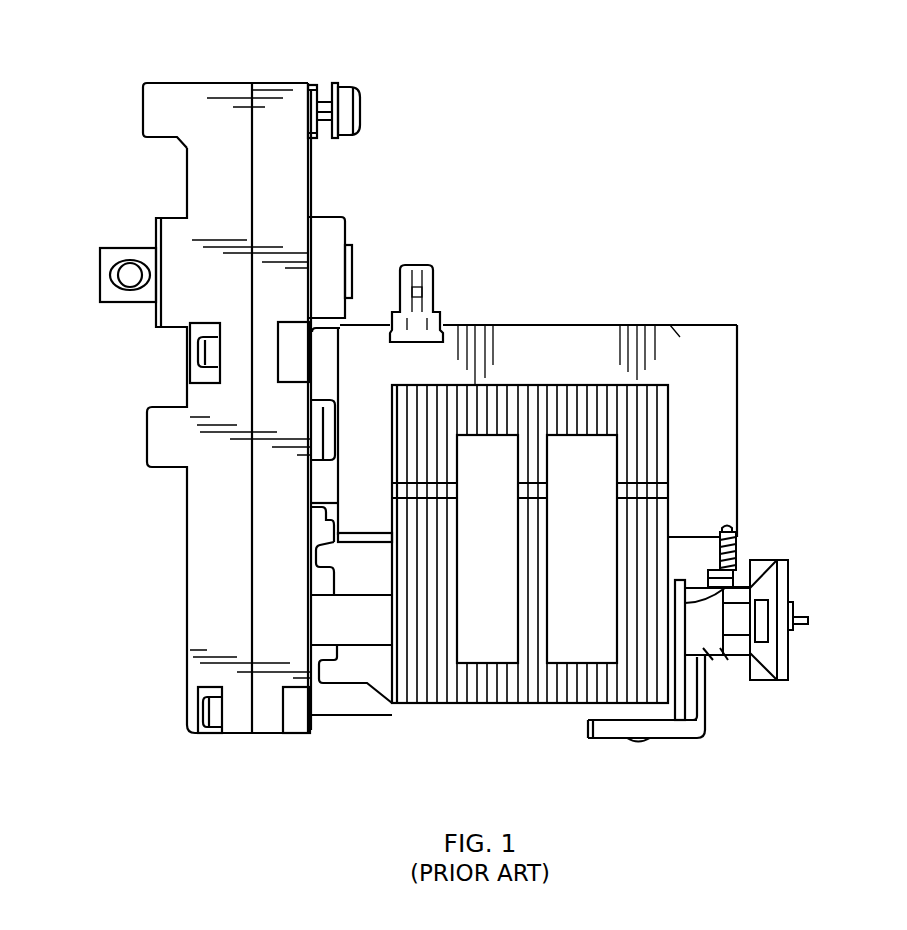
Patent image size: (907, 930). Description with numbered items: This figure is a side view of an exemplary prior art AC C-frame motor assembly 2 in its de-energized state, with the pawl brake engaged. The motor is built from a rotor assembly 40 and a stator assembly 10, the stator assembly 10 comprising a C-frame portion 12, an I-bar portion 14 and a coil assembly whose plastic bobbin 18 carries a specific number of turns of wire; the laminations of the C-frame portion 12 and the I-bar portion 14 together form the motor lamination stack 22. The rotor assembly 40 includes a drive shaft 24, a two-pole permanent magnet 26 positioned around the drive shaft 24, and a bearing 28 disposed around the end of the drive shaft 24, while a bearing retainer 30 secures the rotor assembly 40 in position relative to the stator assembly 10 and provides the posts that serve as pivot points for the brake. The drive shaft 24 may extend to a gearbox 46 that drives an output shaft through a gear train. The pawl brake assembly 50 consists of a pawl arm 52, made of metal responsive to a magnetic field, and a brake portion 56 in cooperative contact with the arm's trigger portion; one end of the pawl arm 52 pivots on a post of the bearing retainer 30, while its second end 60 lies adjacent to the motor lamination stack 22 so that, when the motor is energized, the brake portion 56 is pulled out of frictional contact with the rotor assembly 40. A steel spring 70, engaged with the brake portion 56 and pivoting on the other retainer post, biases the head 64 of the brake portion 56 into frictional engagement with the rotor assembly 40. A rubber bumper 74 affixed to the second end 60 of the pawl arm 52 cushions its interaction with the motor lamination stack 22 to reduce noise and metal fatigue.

The AC C-frame motor assembly 2 is at (497, 325).
The stator assembly 10 is at (675, 498).
The C-frame portion 12 is at (653, 515).
The I-bar portion 14 is at (610, 388).
The bobbin 18 is at (670, 335).
The motor lamination stack 22 is at (505, 703).
The drive shaft 24 is at (743, 622).
The two-pole permanent magnet 26 is at (367, 638).
The bearing 28 is at (783, 663).
The bearing retainer 30 is at (787, 572).
The rotor assembly 40 is at (715, 655).
The gearbox 46 is at (235, 83).
The pawl brake assembly 50 is at (711, 723).
The pawl arm 52 is at (688, 740).
The brake portion 56 is at (730, 582).
The second end 60 is at (593, 738).
The head 64 is at (705, 648).
The spring 70 is at (740, 537).
The rubber bumper 74 is at (635, 740).